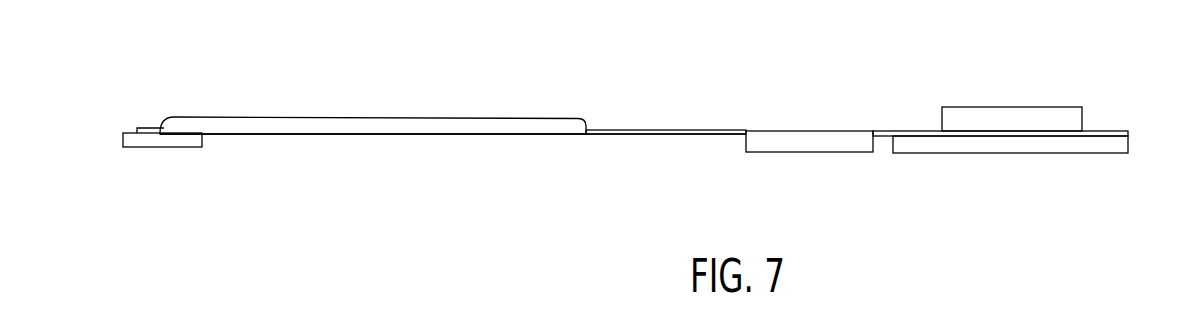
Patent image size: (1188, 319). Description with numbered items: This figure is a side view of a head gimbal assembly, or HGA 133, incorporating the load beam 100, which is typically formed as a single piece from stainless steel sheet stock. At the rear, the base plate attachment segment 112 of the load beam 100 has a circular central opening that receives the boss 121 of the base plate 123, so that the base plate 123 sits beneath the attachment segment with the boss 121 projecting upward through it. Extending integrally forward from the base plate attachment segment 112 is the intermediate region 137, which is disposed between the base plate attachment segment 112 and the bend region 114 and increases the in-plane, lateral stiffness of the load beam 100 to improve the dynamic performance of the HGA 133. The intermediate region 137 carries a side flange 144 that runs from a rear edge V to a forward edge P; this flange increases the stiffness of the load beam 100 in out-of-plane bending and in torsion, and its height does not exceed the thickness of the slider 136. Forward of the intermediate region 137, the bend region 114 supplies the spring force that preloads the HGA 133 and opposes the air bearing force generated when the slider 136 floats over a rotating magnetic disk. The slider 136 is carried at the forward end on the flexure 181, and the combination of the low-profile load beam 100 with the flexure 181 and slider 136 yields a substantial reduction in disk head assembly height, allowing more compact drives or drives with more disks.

The load beam 100 is at (612, 71).
The base plate attachment segment 112 is at (1126, 118).
The bend region 114 is at (647, 155).
The boss 121 is at (990, 107).
The base plate 123 is at (1112, 153).
The HGA 133 is at (444, 95).
The slider 136 is at (159, 149).
The intermediate region 137 is at (813, 128).
The side flange 144 is at (775, 153).
The flexure 181 is at (232, 135).